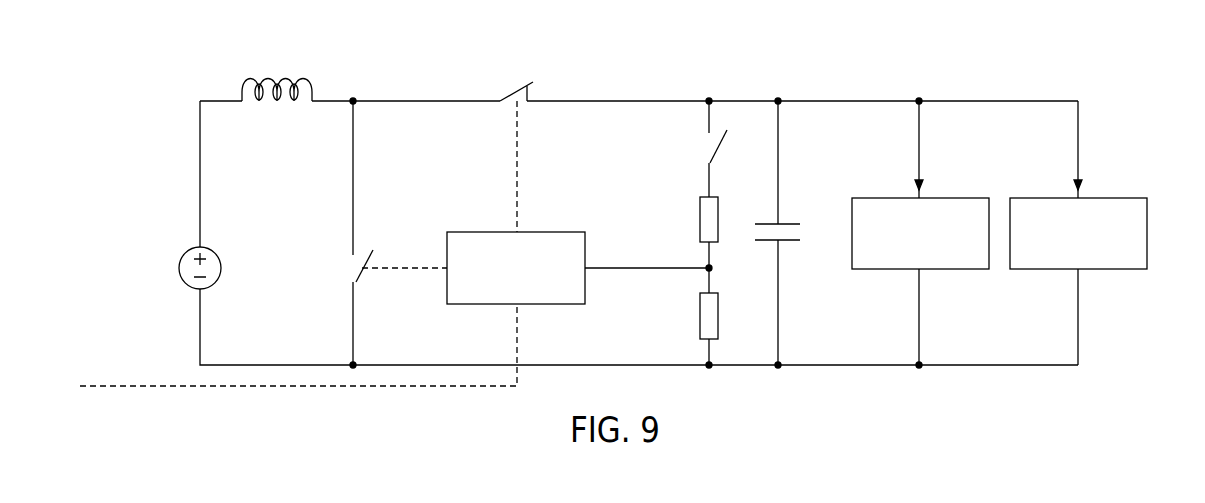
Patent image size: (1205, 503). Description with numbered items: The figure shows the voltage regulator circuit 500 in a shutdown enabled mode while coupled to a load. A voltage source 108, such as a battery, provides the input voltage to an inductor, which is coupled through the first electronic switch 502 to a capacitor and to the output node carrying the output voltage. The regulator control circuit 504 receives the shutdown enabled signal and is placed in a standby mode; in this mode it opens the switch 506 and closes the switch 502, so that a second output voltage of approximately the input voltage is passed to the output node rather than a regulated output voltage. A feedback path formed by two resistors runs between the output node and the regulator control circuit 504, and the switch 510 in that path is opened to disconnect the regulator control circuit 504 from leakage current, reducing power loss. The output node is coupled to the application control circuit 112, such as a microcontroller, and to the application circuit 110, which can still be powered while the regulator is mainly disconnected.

The voltage regulator circuit 500 is at (160, 42).
The voltage source 108 is at (179, 268).
The first electronic switch 502 is at (520, 90).
The regulator control circuit 504 is at (538, 232).
The switch 506 is at (357, 272).
The switch 510 is at (710, 160).
The application control circuit 112 is at (940, 198).
The application circuit 110 is at (1098, 198).